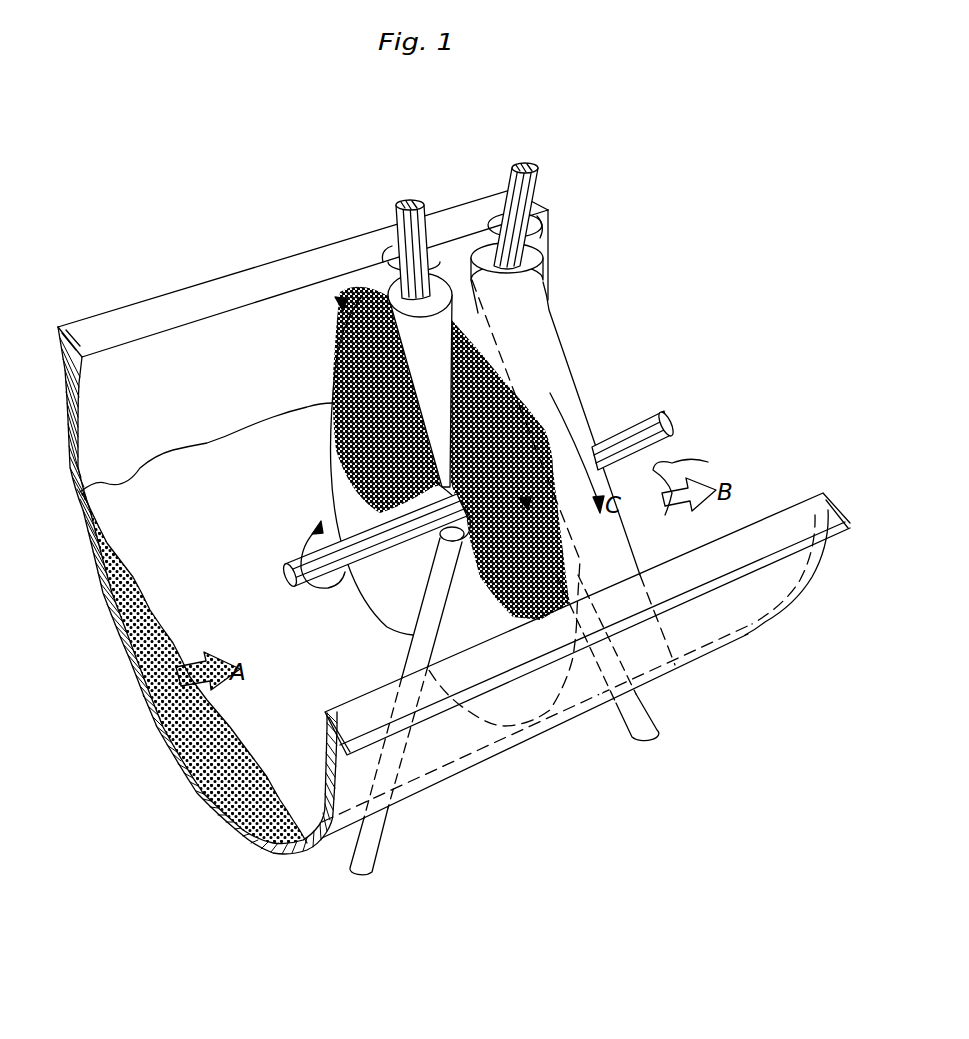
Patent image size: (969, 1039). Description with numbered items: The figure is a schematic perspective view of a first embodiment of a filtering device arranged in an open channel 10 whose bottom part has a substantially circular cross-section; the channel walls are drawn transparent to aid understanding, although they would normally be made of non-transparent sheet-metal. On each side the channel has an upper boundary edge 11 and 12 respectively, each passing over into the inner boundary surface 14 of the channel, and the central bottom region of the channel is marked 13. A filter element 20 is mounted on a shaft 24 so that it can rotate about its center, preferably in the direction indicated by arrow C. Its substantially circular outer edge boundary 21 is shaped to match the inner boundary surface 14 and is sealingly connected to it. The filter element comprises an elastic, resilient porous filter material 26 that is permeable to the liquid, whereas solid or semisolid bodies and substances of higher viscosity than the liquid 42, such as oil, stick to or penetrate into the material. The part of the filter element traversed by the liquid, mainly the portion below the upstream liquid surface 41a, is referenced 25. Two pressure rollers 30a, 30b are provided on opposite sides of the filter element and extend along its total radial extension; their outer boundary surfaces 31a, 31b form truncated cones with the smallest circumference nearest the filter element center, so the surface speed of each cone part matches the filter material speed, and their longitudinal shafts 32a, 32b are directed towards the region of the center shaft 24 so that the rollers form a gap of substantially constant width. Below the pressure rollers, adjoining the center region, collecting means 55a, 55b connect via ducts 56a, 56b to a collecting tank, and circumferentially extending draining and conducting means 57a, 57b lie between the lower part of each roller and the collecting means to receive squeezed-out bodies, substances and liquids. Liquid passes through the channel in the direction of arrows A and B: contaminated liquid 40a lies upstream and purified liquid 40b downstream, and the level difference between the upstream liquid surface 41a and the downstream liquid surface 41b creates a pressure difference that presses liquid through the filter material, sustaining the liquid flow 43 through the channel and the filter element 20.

The open channel 10 is at (549, 255).
The upper boundary edge 11 is at (466, 215).
The upper boundary edge 12 is at (827, 505).
The central bottom region 13 is at (185, 719).
The inner boundary surface 14 is at (212, 365).
The filter element 20 is at (340, 303).
The outer edge boundary 21 is at (548, 368).
The shaft 24 is at (633, 432).
The traversed part of the filter element 25 is at (410, 578).
The porous filter material 26 is at (332, 352).
The pressure roller 30a is at (392, 335).
The pressure roller 30b is at (533, 267).
The outer boundary surface 31a is at (423, 387).
The outer boundary surface 31b is at (532, 296).
The longitudinal shaft 32a is at (398, 216).
The longitudinal shaft 32b is at (535, 172).
The contaminated liquid 40a is at (200, 747).
The purified liquid 40b is at (677, 543).
The liquid surface 41a is at (196, 470).
The liquid surface 41b is at (703, 482).
The liquid 42 is at (148, 655).
The liquid flow 43 is at (790, 604).
The collecting means 55a is at (510, 469).
The collecting means 55b is at (527, 505).
The duct 56a is at (368, 846).
The duct 56b is at (645, 716).
The draining and conducting means 57a is at (387, 400).
The draining and conducting means 57b is at (478, 514).